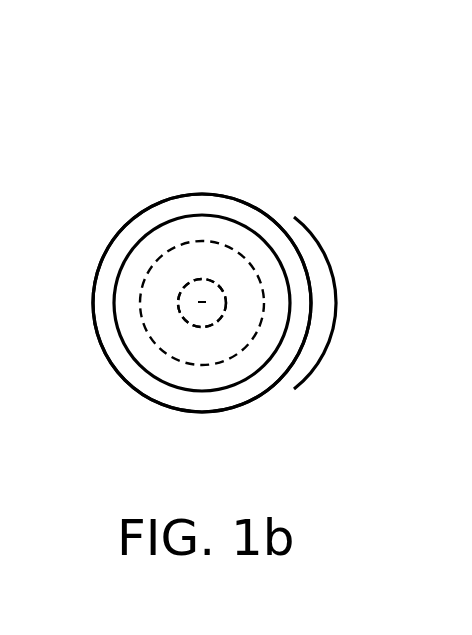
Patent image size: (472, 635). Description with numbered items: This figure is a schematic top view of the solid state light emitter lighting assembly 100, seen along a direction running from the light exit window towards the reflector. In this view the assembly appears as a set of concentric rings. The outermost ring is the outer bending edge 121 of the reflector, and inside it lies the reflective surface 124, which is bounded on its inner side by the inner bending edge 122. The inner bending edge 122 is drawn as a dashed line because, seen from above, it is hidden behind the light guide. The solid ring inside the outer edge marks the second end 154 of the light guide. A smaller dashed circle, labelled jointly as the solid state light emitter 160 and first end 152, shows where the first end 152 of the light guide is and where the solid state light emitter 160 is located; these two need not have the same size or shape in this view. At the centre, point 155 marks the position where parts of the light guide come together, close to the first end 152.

The solid state light emitter lighting assembly 100 is at (146, 103).
The outer bending edge 121 is at (312, 307).
The second end of the light guide 154 is at (276, 351).
The reflective surface 124 is at (297, 306).
The inner bending edge 122 is at (169, 250).
The solid state light emitter 160 is at (216, 283).
The first end of the light guide 152 is at (202, 303).
The point of the light guide 155 is at (202, 302).